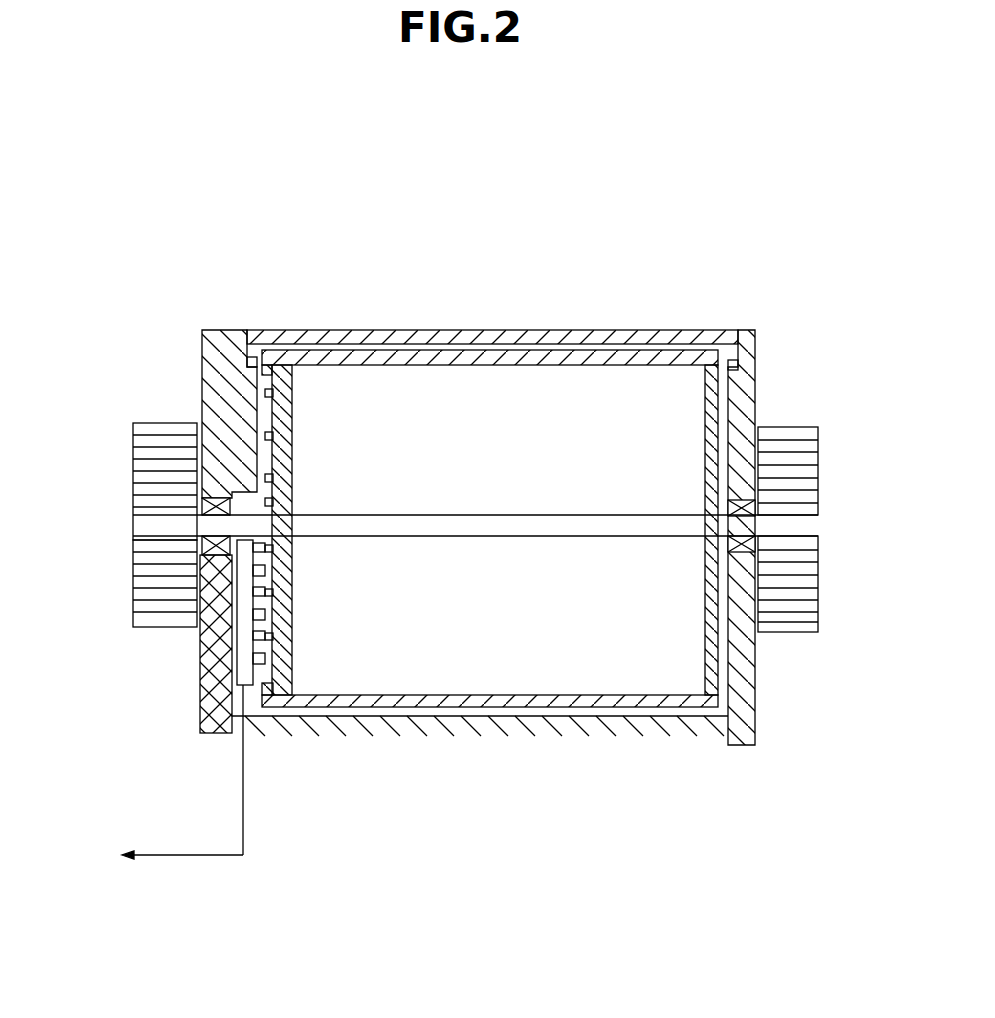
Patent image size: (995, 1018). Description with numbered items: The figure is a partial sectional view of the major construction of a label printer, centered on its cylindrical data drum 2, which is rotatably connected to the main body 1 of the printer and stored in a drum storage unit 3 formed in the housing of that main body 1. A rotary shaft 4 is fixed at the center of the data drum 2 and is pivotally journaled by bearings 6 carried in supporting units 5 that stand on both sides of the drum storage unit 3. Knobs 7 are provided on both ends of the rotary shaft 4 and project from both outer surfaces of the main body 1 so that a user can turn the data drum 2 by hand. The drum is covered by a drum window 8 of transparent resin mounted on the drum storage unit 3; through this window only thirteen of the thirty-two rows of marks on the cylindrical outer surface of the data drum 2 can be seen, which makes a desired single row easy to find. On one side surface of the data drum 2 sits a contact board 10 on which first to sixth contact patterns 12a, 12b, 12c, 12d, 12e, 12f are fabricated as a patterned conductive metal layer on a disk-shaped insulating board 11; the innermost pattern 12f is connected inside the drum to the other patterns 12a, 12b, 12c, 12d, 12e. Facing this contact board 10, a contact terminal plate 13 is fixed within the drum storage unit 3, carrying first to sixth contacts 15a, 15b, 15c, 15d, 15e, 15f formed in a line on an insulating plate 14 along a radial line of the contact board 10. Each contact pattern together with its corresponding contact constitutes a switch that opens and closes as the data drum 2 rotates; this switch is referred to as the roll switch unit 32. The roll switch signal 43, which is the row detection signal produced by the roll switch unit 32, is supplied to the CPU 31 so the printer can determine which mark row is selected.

The main body of the label printer 1 is at (722, 752).
The data drum 2 is at (580, 395).
The drum storage unit 3 is at (652, 704).
The rotary shaft 4 is at (588, 515).
The supporting unit 5 is at (210, 370).
The bearing 6 is at (205, 462).
The knob 7 is at (140, 562).
The drum window 8 is at (358, 330).
The contact board 10 is at (310, 383).
The insulating board 11 is at (283, 665).
The first contact pattern 12a is at (273, 394).
The second contact pattern 12b is at (273, 638).
The third contact pattern 12c is at (273, 437).
The fourth contact pattern 12d is at (273, 592).
The fifth contact pattern 12e is at (273, 478).
The sixth contact pattern 12f is at (273, 502).
The contact terminal plate 13 is at (214, 557).
The insulating plate 14 is at (203, 715).
The first contact 15a is at (253, 658).
The second contact 15b is at (253, 636).
The third contact 15c is at (253, 614).
The fourth contact 15d is at (253, 592).
The fifth contact 15e is at (253, 570).
The sixth contact 15f is at (253, 548).
The CPU 31 is at (182, 869).
The roll switch unit 32 is at (322, 625).
The roll switch signal 43 is at (243, 828).